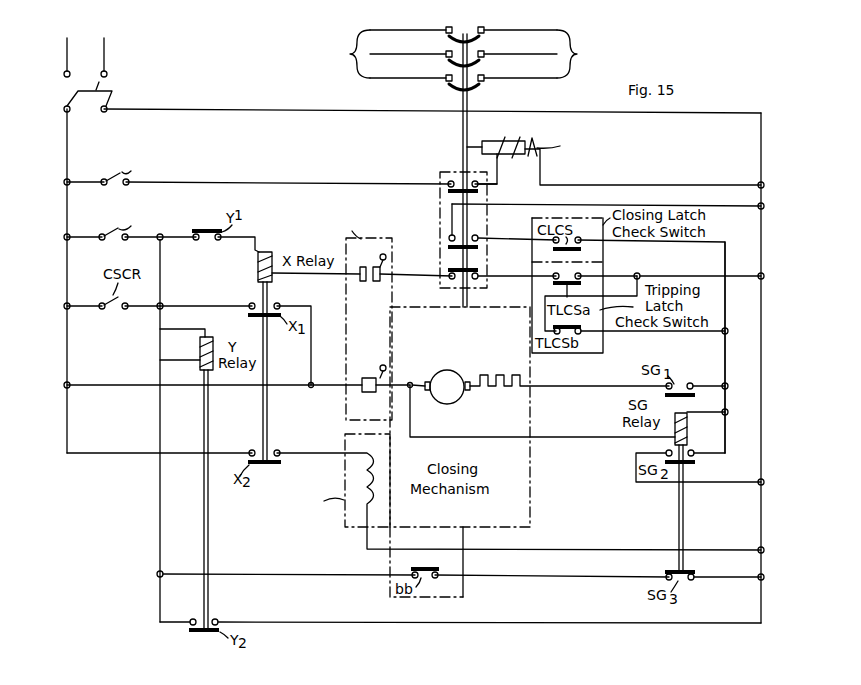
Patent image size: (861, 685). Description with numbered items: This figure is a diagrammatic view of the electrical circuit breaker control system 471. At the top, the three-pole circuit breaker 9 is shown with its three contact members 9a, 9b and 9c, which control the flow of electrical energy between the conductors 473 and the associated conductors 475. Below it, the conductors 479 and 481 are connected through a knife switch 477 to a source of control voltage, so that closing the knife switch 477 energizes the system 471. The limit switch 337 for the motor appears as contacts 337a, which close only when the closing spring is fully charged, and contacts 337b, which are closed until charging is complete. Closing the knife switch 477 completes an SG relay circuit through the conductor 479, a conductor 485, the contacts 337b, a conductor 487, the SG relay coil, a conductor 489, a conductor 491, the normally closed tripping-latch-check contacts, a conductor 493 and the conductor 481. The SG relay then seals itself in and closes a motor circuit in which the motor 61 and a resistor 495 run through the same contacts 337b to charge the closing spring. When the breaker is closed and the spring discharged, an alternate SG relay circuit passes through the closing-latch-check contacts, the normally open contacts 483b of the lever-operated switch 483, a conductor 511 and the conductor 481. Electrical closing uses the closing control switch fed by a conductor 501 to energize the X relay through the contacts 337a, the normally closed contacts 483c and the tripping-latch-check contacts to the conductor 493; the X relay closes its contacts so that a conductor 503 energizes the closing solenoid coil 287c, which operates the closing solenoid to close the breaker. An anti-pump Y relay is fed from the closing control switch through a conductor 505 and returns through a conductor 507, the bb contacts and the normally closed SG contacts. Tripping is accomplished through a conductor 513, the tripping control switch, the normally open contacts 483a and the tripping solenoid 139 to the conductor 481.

The circuit breaker control system 471 is at (230, 89).
The conductors 473 is at (351, 54).
The associated conductors 475 is at (578, 54).
The contact member 9a is at (484, 33).
The contact member 9b is at (484, 57).
The contact member 9c is at (484, 81).
The three-pole circuit breaker 9 is at (455, 134).
The knife switch 477 is at (112, 91).
The conductor 479 is at (68, 141).
The conductor 481 is at (292, 109).
The tripping solenoid 139 is at (516, 143).
The switch 483 is at (440, 177).
The normally open contacts 483a is at (447, 191).
The normally open contacts 483b is at (447, 247).
The normally closed contacts 483c is at (450, 280).
The conductor 511 is at (542, 205).
The conductor 513 is at (90, 180).
The conductor 501 is at (90, 236).
The conductor 505 is at (160, 292).
The limit switch 337 is at (347, 344).
The limit switch contacts 337a is at (363, 281).
The limit switch contacts 337b is at (366, 376).
The conductor 485 is at (95, 384).
The conductor 503 is at (132, 452).
The conductor 487 is at (413, 436).
The motor 61 is at (460, 398).
The resistor 495 is at (569, 366).
The conductor 493 is at (665, 275).
The conductor 491 is at (652, 333).
The conductor 489 is at (725, 366).
The closing solenoid coil 287c is at (366, 478).
The conductor 507 is at (185, 566).